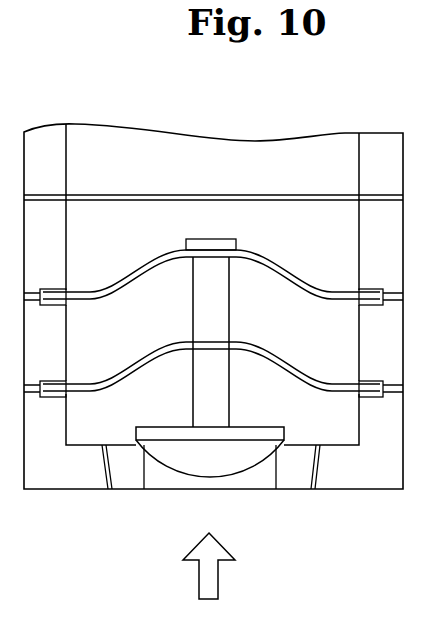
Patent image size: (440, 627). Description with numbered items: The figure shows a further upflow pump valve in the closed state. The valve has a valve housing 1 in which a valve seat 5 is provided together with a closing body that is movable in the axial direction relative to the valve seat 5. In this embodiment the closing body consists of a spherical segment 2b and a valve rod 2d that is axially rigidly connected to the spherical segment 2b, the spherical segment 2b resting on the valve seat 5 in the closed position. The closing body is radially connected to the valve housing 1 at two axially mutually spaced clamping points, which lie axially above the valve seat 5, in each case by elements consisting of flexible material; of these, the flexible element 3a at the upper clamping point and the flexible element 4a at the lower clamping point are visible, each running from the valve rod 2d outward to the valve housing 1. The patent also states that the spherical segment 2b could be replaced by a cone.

The valve housing 1 is at (68, 468).
The valve seat 5 is at (119, 462).
The spherical segment 2b is at (260, 447).
The valve rod 2d is at (222, 312).
The element consisting of flexible material 3a is at (274, 263).
The element consisting of flexible material 4a is at (335, 390).